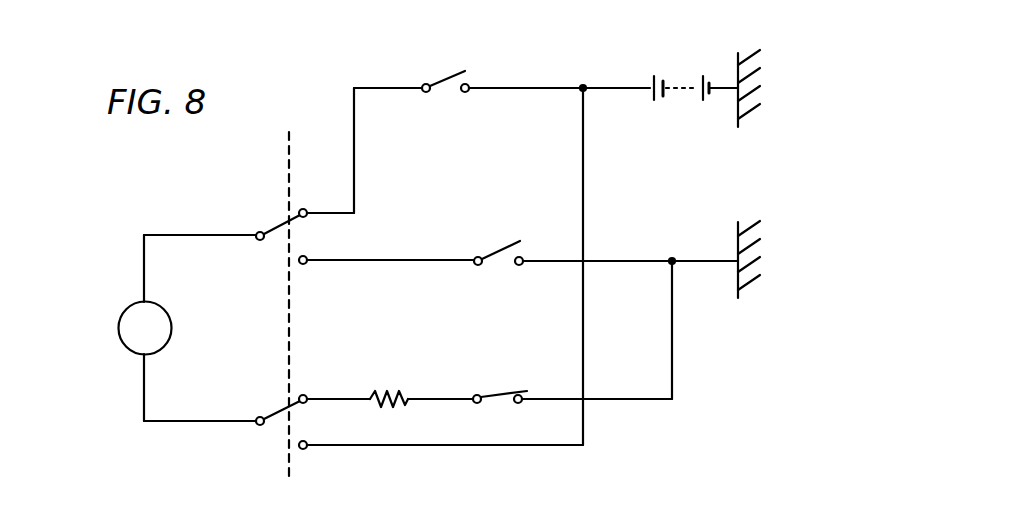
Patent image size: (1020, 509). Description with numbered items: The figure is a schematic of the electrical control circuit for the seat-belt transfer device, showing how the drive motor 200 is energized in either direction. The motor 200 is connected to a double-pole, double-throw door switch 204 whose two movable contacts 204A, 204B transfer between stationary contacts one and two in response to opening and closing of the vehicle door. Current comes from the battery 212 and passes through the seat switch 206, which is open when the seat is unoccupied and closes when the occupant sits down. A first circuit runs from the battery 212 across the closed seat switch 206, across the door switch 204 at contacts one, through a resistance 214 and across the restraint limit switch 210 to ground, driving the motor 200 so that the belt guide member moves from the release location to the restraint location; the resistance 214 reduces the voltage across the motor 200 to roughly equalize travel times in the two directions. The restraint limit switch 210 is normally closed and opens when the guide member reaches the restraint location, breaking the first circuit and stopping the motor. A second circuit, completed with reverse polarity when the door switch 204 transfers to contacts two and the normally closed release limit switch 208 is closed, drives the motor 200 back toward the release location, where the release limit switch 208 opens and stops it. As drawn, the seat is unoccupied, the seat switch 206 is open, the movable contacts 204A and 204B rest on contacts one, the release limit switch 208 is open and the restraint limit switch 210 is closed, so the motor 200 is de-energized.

The drive motor 200 is at (126, 311).
The door switch 204 is at (255, 328).
The movable contact 204A is at (281, 227).
The movable contact 204B is at (286, 412).
The seat switch 206 is at (442, 81).
The release limit switch 208 is at (499, 250).
The restraint limit switch 210 is at (502, 393).
The battery 212 is at (660, 80).
The resistance 214 is at (384, 390).